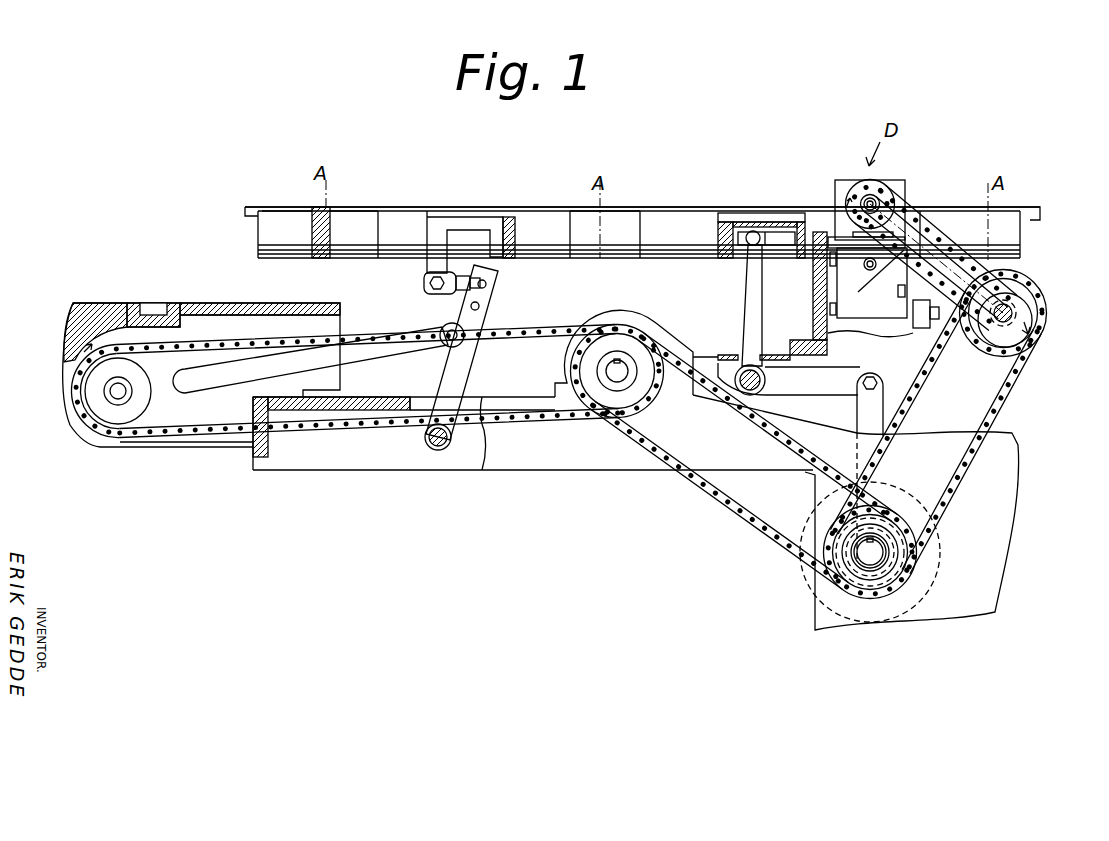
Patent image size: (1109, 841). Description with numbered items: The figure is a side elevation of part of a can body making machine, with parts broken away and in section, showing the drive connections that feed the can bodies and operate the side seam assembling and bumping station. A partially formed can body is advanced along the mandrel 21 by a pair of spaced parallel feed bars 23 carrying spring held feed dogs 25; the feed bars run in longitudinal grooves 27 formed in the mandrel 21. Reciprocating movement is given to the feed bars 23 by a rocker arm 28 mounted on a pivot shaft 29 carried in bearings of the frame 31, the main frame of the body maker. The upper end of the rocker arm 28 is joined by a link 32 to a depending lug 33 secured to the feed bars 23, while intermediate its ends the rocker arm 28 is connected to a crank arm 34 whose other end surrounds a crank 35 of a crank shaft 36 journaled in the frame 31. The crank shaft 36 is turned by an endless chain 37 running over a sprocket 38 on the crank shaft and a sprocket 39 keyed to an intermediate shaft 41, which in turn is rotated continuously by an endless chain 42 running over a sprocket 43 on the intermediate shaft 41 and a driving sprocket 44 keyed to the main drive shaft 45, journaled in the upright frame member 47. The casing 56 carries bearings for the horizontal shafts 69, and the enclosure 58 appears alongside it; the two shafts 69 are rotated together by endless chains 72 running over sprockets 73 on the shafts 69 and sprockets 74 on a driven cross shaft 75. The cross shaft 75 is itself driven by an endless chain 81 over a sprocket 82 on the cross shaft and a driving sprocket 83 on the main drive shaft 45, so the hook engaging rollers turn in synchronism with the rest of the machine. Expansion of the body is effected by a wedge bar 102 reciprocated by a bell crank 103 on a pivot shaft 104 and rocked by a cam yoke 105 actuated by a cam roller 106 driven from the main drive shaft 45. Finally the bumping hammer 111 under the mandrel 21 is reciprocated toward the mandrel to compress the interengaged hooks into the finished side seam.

The mandrel 21 is at (705, 203).
The feed bars 23 is at (432, 203).
The feed dogs 25 is at (311, 210).
The longitudinal grooves 27 is at (328, 207).
The rocker arm 28 is at (458, 378).
The pivot shaft 29 is at (425, 440).
The frame 31 is at (580, 450).
The link 32 is at (455, 292).
The depending lug 33 is at (438, 240).
The crank arm 34 is at (215, 384).
The crank 35 is at (160, 352).
The crank shaft 36 is at (110, 391).
The endless chain 37 is at (292, 425).
The sprocket 38 is at (130, 420).
The sprocket 39 is at (617, 343).
The intermediate shaft 41 is at (610, 371).
The endless chain 42 is at (706, 420).
The sprocket 43 is at (560, 387).
The driving sprocket 44 is at (905, 537).
The drive shaft 45 is at (865, 556).
The upright frame member 47 is at (975, 549).
The casing 56 is at (891, 177).
The gear box 58 is at (848, 286).
The shafts 69 is at (866, 198).
The endless chains 72 is at (938, 233).
The sprockets 73 is at (895, 208).
The sprockets 74 is at (1035, 302).
The driven cross shaft 75 is at (1008, 308).
The endless chain 81 is at (1012, 380).
The sprocket 82 is at (1030, 322).
The driving sprocket 83 is at (886, 570).
The wedge bar 102 is at (772, 236).
The bell crank 103 is at (750, 282).
The pivot shaft 104 is at (778, 398).
The cam yoke 105 is at (872, 420).
The cam roller 106 is at (890, 476).
The bumping hammer 111 is at (908, 292).